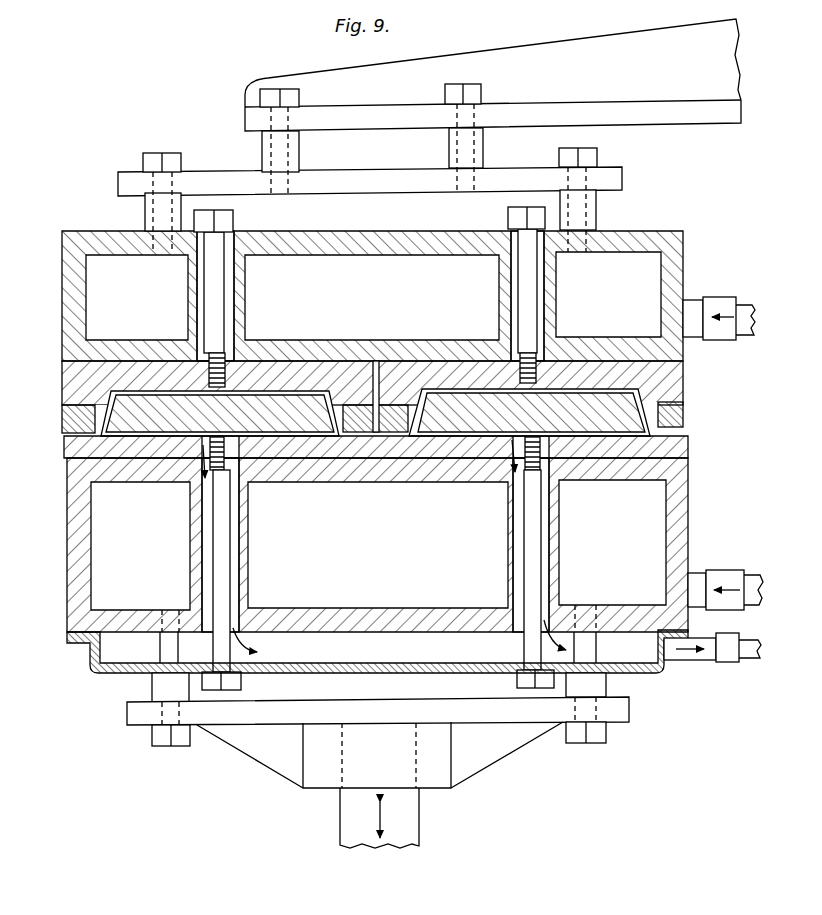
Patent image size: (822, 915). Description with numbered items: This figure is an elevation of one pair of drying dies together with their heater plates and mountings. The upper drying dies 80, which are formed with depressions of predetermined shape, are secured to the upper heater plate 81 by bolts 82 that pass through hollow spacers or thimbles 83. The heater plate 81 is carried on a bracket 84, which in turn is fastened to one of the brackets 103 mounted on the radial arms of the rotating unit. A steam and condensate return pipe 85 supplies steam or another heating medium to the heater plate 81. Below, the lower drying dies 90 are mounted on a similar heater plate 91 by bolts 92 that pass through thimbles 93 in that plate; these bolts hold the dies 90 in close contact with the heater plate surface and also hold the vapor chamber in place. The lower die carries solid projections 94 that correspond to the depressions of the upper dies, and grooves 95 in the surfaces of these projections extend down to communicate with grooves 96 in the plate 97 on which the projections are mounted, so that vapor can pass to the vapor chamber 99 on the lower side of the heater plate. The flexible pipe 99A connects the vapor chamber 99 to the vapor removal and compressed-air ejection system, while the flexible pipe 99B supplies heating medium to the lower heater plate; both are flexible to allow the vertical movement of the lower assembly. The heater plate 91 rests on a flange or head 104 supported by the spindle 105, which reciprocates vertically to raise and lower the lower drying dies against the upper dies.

The upper drying die 80 is at (82, 382).
The heater plate 81 is at (90, 277).
The bolt 82 is at (218, 327).
The thimble 83 is at (188, 295).
The bracket 84 is at (387, 185).
The steam and condensate return pipe 85 is at (719, 297).
The lower drying die 90 is at (64, 450).
The heater plate 91 is at (66, 535).
The bolt 92 is at (223, 580).
The thimble 93 is at (252, 538).
The solid projection 94 is at (306, 415).
The groove 95 is at (92, 409).
The groove 96 is at (287, 437).
The plate 97 is at (380, 437).
The vapor chamber 99 is at (110, 675).
The pipe 99A is at (754, 660).
The pipe 99B is at (751, 567).
The bracket 103 is at (679, 97).
The flange or head 104 is at (272, 752).
The spindle 105 is at (342, 817).